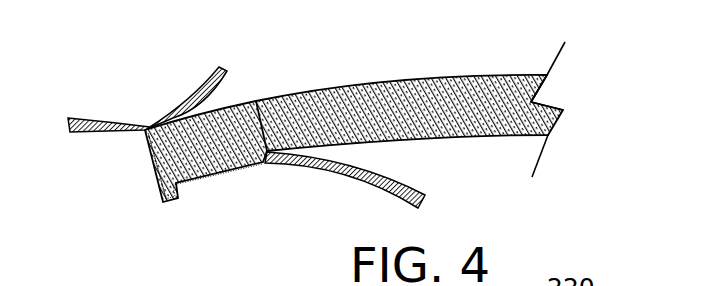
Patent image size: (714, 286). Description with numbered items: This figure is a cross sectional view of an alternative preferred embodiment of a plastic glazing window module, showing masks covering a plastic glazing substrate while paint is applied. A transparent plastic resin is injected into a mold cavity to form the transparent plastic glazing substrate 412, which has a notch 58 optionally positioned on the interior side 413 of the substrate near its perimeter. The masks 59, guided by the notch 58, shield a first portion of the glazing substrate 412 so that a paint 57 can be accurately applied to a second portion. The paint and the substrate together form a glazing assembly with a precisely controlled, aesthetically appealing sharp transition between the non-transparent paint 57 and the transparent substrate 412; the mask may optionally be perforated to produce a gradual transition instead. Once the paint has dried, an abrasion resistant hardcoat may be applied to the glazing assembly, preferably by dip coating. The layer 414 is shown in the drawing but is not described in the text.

The paint 57 is at (157, 180).
The notch 58 is at (256, 101).
The masks 59 is at (170, 116).
The transparent plastic glazing substrate 412 is at (532, 102).
The interior side 413 is at (453, 137).
The upper layer 414 is at (303, 90).